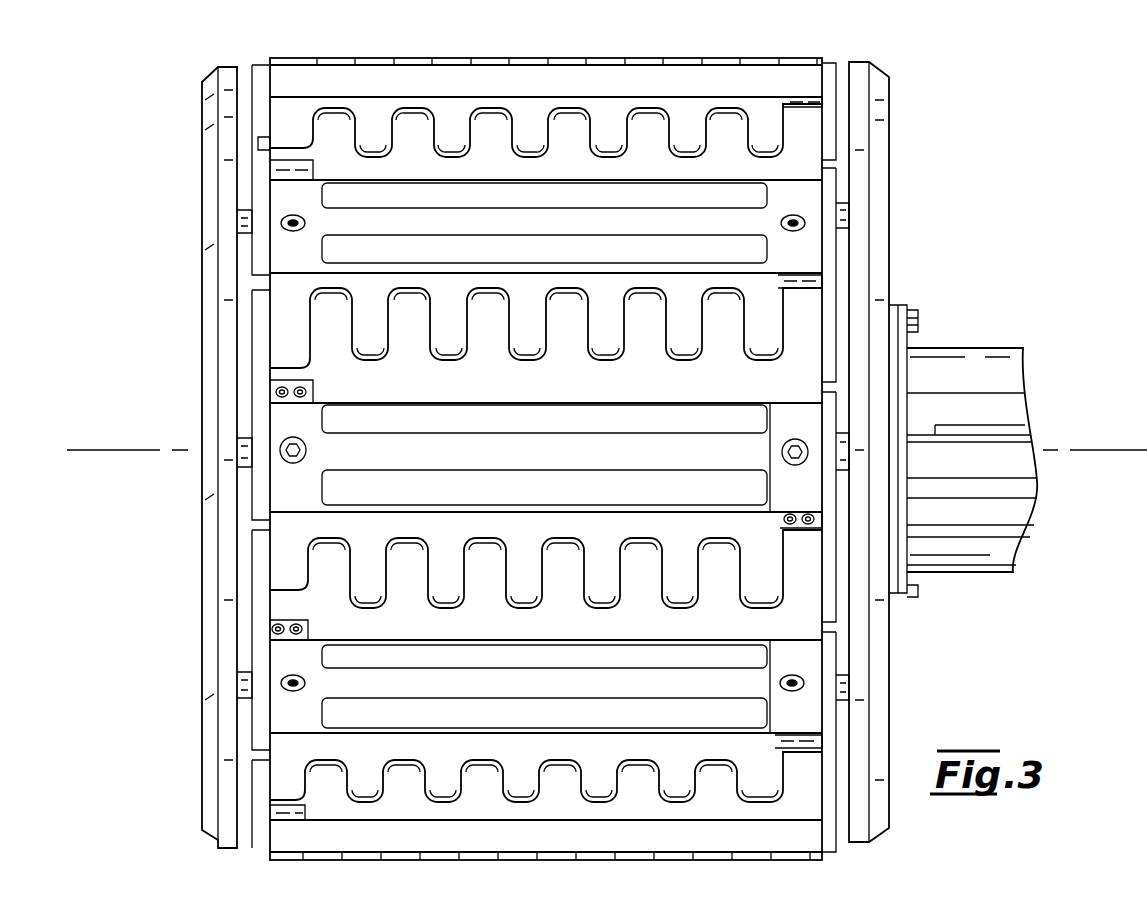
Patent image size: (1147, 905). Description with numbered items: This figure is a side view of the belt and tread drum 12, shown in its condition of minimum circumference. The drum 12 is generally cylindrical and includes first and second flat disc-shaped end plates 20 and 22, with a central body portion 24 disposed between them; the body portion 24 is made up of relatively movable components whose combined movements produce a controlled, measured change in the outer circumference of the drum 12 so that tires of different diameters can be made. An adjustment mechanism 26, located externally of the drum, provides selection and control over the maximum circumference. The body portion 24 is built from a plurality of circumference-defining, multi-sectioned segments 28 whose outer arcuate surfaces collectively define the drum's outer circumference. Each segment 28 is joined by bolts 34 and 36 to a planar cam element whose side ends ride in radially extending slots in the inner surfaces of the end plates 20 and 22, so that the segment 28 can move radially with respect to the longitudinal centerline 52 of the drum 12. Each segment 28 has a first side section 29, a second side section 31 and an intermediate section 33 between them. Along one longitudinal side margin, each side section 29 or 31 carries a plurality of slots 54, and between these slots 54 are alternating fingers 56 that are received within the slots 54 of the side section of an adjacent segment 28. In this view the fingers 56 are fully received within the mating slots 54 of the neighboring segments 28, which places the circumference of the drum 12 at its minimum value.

The belt and tread drum 12 is at (178, 281).
The first end plate 20 is at (212, 116).
The second end plate 22 is at (878, 120).
The central body portion 24 is at (742, 57).
The adjustment mechanism 26 is at (946, 338).
The multi-sectioned segment 28 is at (785, 432).
The first side section 29 is at (322, 142).
The second side section 31 is at (292, 323).
The intermediate section 33 is at (285, 248).
The bolt 34 is at (308, 450).
The bolt 36 is at (782, 451).
The longitudinal centerline 52 is at (1097, 449).
The slot 54 is at (518, 334).
The finger 56 is at (572, 300).